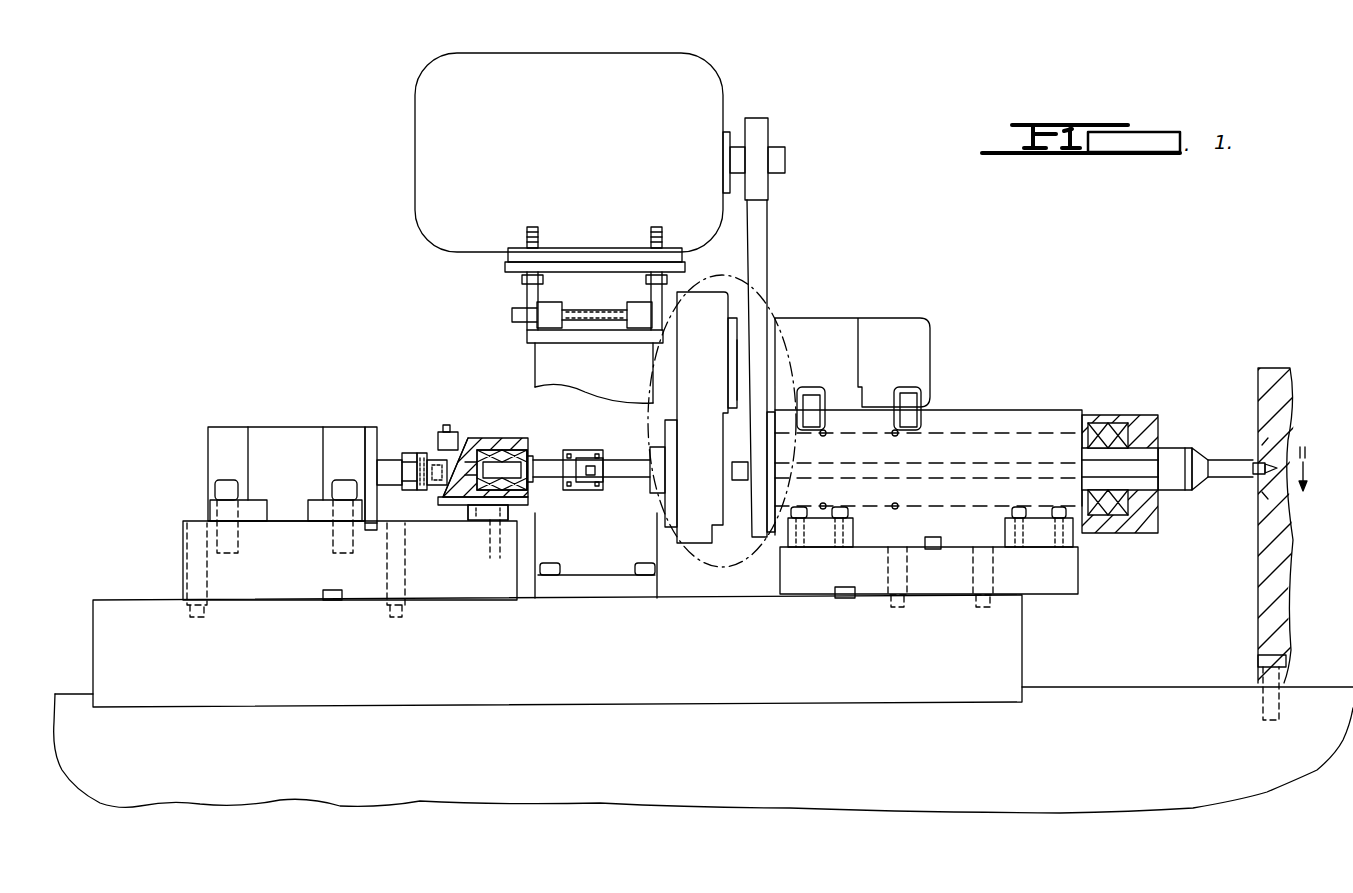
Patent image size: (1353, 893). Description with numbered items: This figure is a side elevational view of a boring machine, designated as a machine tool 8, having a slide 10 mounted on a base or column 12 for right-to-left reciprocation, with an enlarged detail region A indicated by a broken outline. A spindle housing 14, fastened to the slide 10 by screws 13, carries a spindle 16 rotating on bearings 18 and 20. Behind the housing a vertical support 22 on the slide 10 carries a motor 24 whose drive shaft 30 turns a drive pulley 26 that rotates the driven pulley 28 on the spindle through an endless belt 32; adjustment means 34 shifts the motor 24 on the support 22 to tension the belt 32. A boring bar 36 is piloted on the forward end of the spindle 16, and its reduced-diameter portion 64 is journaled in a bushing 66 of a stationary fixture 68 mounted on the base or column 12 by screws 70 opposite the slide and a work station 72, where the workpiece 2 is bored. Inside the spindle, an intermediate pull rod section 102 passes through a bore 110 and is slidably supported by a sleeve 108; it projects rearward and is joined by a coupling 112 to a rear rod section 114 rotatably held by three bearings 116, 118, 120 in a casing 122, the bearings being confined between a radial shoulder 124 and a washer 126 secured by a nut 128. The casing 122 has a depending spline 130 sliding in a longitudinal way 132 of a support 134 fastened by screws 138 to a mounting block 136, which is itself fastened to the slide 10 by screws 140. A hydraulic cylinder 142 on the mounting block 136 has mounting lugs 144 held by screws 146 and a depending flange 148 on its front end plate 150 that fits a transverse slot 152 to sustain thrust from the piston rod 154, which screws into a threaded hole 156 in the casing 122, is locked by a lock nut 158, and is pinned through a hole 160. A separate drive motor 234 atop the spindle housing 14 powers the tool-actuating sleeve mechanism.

The workpiece 2 is at (1298, 528).
The machine tool 8 is at (1112, 656).
The slide 10 is at (98, 614).
The base or column 12 is at (1133, 707).
The screws 13 is at (960, 628).
The spindle housing 14 is at (958, 410).
The spindle 16 is at (1172, 448).
The bearing 18 is at (836, 430).
The bearing 20 is at (1124, 525).
The vertical support 22 is at (547, 373).
The motor 24 is at (428, 181).
The drive pulley 26 is at (768, 125).
The driven pulley 28 is at (757, 537).
The motor drive shaft 30 is at (787, 158).
The endless belt 32 is at (767, 210).
The adjustment means 34 is at (500, 301).
The boring bar 36 is at (1206, 494).
The portion of reduced diameter 64 is at (1262, 462).
The bushing 66 is at (1272, 472).
The stationary fixture 68 is at (1265, 570).
The screws 70 is at (1260, 658).
The work station 72 is at (1213, 426).
The intermediate pull rod section 102 is at (624, 473).
The sleeve 108 is at (1098, 440).
The bore 110 is at (1140, 518).
The coupling 112 is at (598, 453).
The rear rod section 114 is at (566, 448).
The bearing 116 is at (530, 500).
The bearing 118 is at (512, 450).
The bearing 120 is at (534, 455).
The casing 122 is at (460, 447).
The radial shoulder 124 is at (524, 465).
The washer 126 is at (462, 501).
The nut 128 is at (480, 452).
The depending spline 130 is at (490, 512).
The longitudinal way 132 is at (632, 517).
The support 134 is at (512, 508).
The mounting block 136 is at (185, 542).
The screws 138 is at (505, 550).
The screws 140 is at (183, 566).
The hydraulic cylinder 142 is at (283, 437).
The mounting lugs 144 is at (318, 500).
The screws 146 is at (342, 478).
The depending flange 148 is at (376, 532).
The front end plate 150 is at (371, 428).
The transverse slot 152 is at (365, 527).
The piston rod 154 is at (408, 452).
The threaded hole 156 is at (433, 489).
The lock nut 158 is at (423, 452).
The hole 160 is at (450, 425).
The drive motor 234 is at (890, 335).
The detail area A is at (795, 300).